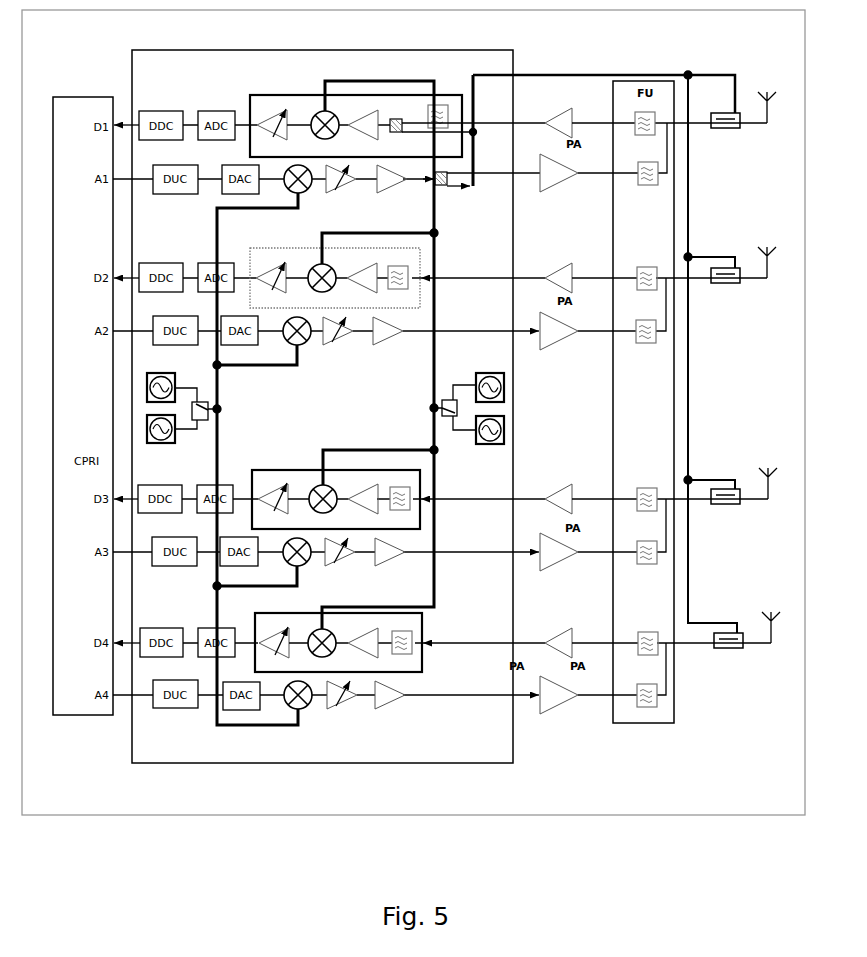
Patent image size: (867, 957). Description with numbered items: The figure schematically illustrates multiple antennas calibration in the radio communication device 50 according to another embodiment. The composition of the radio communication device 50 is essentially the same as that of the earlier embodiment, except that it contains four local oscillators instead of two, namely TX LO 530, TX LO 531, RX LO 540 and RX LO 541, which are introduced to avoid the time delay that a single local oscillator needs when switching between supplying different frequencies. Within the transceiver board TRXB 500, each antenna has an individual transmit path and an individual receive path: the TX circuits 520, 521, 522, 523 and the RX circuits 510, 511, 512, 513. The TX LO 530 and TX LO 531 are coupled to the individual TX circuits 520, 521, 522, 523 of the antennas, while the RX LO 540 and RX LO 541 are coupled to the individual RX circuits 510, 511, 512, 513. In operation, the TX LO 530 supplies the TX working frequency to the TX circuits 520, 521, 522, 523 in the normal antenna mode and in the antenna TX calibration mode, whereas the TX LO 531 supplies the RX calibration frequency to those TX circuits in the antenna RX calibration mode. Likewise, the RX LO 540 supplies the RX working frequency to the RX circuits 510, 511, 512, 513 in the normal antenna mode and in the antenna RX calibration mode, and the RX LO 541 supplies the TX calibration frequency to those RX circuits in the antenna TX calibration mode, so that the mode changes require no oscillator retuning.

The radio communication device 50 is at (413, 412).
The TRXB 500 is at (322, 406).
The RX circuit 510 is at (384, 118).
The RX circuit 511 is at (327, 271).
The RX circuit 512 is at (330, 492).
The RX circuit 513 is at (324, 635).
The TX circuit 520 is at (412, 186).
The TX circuit 521 is at (406, 338).
The TX circuit 522 is at (406, 560).
The TX circuit 523 is at (407, 705).
The TX LO 530 is at (163, 380).
The TX LO 531 is at (163, 440).
The RX LO 540 is at (476, 380).
The RX LO 541 is at (482, 442).